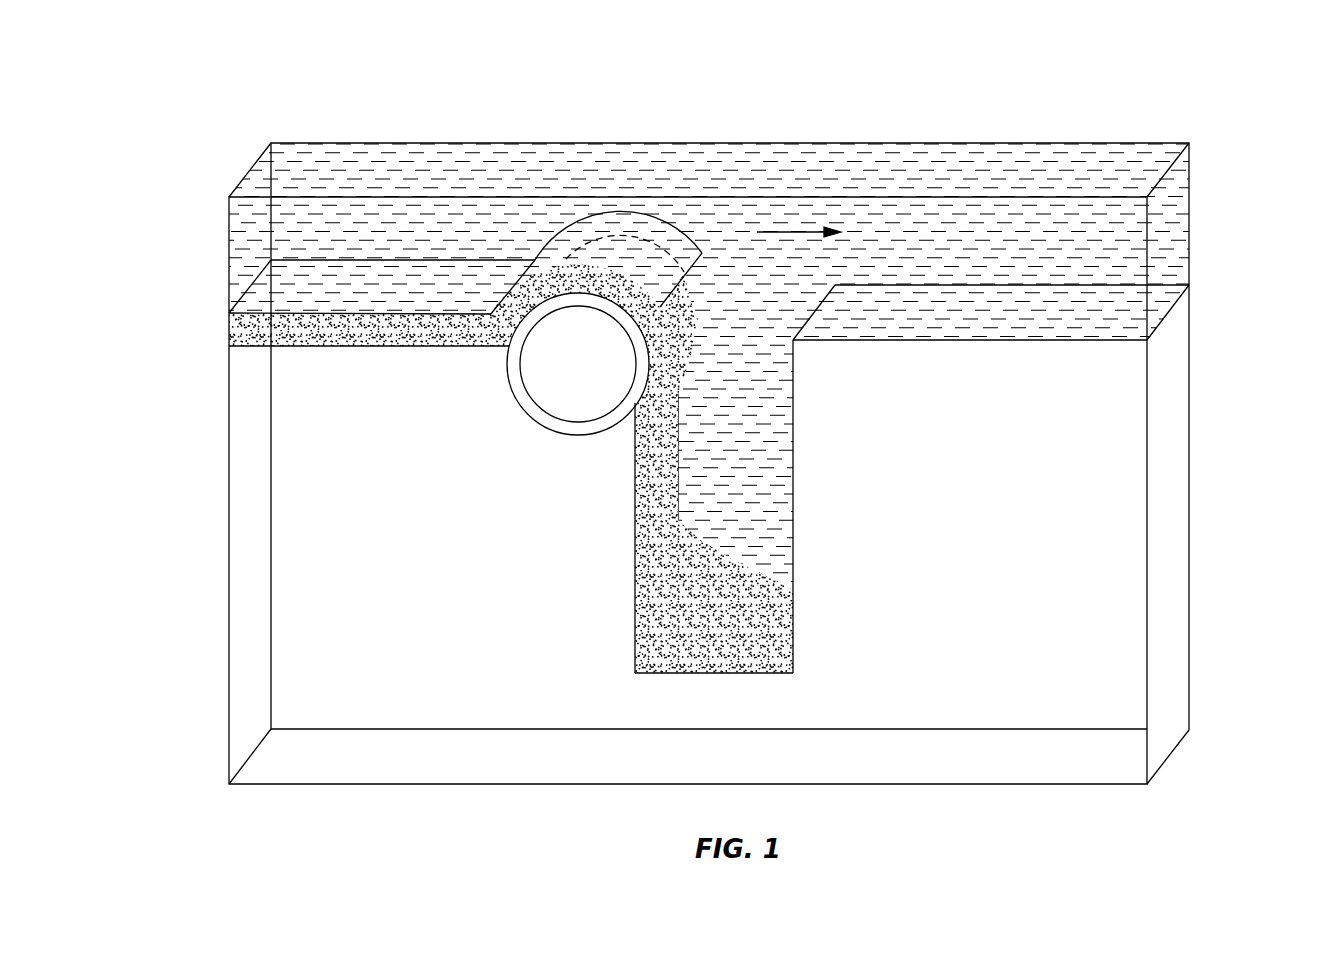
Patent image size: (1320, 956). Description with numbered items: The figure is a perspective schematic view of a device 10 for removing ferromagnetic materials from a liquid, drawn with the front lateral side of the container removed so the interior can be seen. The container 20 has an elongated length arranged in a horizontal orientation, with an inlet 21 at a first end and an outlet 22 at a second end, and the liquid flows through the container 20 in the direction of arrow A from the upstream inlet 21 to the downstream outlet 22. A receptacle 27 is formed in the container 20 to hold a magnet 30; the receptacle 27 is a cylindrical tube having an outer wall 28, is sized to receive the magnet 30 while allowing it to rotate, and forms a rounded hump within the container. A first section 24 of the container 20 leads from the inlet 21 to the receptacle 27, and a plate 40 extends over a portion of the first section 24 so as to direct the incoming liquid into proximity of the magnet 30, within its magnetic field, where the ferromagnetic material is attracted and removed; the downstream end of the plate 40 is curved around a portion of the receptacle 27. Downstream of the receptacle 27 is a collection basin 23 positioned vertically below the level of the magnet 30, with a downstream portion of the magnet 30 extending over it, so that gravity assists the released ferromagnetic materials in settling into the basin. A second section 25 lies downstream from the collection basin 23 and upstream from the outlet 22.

The device 10 is at (405, 108).
The container 20 is at (228, 567).
The inlet 21 is at (230, 314).
The outlet 22 is at (1170, 201).
The collection basin 23 is at (743, 477).
The first section 24 is at (367, 328).
The second section 25 is at (1083, 300).
The receptacle 27 is at (506, 364).
The outer wall 28 is at (620, 285).
The magnet 30 is at (538, 413).
The plate 40 is at (305, 288).
The arrow A is at (800, 230).